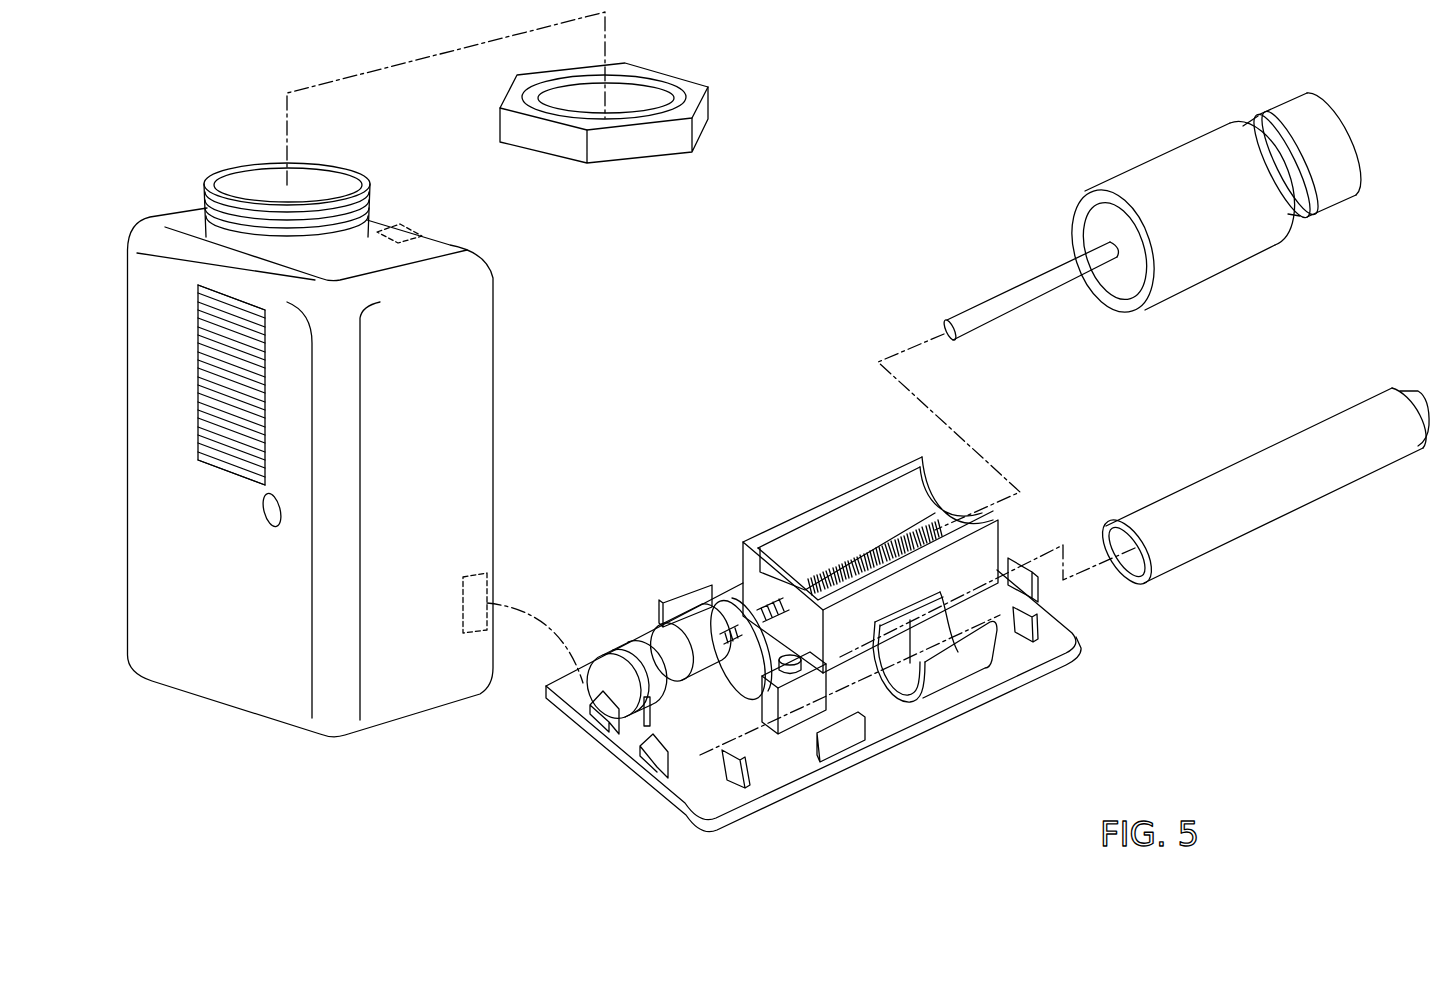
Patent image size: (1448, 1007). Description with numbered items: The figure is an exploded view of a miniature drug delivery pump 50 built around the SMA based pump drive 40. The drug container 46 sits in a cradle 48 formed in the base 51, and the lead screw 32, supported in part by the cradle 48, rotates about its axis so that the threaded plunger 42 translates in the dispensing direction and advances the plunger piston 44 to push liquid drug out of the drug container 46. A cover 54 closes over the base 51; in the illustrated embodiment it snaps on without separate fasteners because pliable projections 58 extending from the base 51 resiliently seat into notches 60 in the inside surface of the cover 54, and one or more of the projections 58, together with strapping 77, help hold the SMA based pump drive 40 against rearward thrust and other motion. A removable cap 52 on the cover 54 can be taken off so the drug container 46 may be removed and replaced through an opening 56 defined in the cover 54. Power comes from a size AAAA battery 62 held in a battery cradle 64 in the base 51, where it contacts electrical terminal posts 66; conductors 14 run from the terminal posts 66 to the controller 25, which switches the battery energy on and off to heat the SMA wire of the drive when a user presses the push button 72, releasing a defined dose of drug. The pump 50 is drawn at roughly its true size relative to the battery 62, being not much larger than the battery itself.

The conductors 14 is at (873, 680).
The controller 25 is at (762, 708).
The lead screw 32 is at (885, 552).
The SMA based pump drive 40 is at (613, 641).
The plunger 42 is at (990, 300).
The plunger piston 44 is at (1093, 228).
The drug container 46 is at (1163, 160).
The cradle 48 is at (862, 482).
The drug delivery pump 50 is at (980, 130).
The base 51 is at (1048, 660).
The removable cap 52 is at (703, 120).
The cover 54 is at (252, 647).
The opening 56 is at (251, 190).
The projections 58 is at (676, 598).
The notches 60 is at (405, 233).
The battery 62 is at (1260, 512).
The battery cradle 64 is at (950, 678).
The electrical terminal posts 66 is at (1075, 628).
The push button 72 is at (733, 603).
The strapping 77 is at (655, 718).